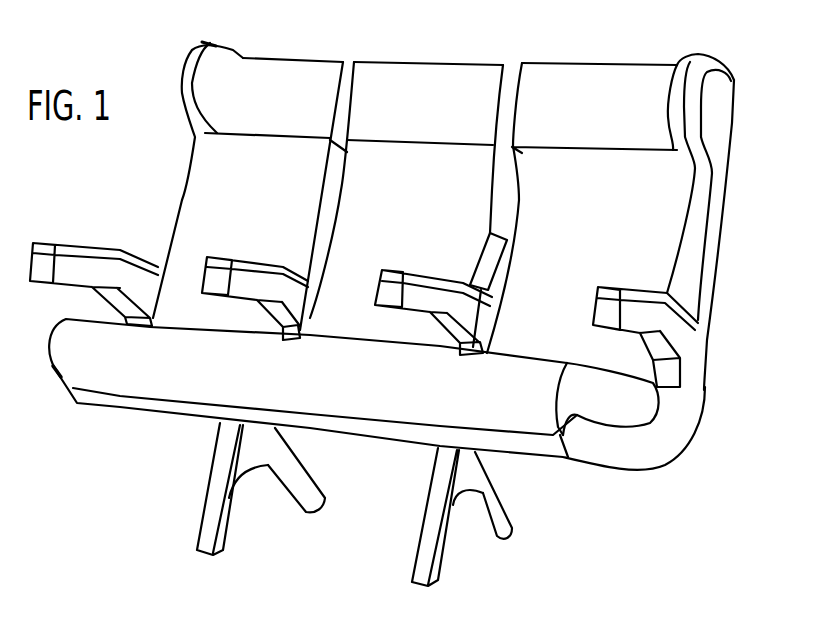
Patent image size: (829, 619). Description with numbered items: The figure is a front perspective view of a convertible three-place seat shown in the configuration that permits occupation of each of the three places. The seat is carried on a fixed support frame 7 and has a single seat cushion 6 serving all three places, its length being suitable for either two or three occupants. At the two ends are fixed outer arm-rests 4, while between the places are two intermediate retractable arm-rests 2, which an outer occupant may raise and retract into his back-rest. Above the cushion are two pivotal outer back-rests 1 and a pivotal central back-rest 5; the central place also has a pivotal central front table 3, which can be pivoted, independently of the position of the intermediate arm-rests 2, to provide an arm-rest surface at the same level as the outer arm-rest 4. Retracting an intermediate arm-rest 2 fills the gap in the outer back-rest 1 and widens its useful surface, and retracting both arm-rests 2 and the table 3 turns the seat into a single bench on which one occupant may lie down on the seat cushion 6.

The pivotal outer back-rest 1 is at (182, 77).
The intermediate retractable arm-rest 2 is at (268, 282).
The pivotal central front table 3 is at (413, 214).
The fixed outer arm-rest 4 is at (100, 256).
The pivotal central back-rest 5 is at (575, 90).
The seat cushion 6 is at (130, 370).
The fixed support frame 7 is at (420, 538).